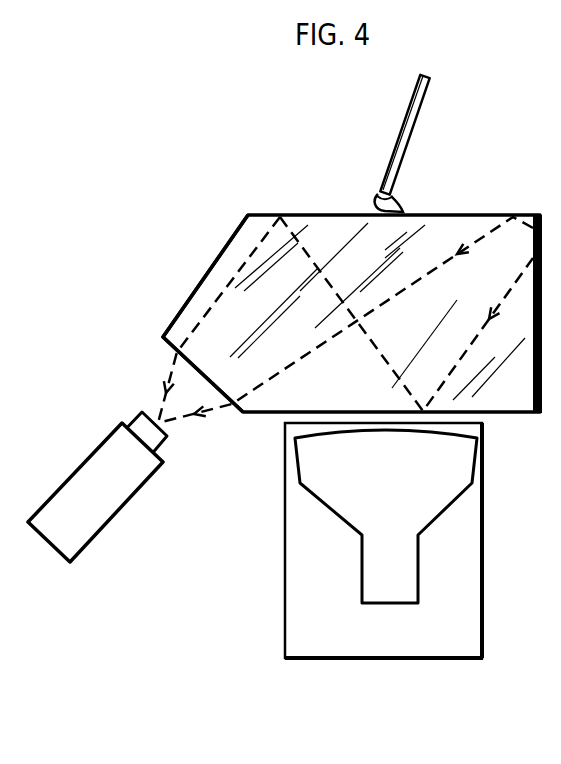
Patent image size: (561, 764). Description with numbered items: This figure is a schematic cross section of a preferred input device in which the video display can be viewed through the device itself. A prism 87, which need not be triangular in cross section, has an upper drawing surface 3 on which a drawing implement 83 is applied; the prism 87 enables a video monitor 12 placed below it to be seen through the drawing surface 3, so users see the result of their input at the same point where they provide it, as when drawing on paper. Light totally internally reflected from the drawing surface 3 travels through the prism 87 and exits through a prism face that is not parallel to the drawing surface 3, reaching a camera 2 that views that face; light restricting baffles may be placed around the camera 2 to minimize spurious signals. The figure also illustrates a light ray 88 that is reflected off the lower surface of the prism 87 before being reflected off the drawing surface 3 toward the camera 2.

The camera 2 is at (73, 485).
The drawing surface 3 is at (437, 215).
The video monitor 12 is at (467, 596).
The drawing implement 83 is at (376, 201).
The prism 87 is at (218, 272).
The light ray 88 is at (382, 352).